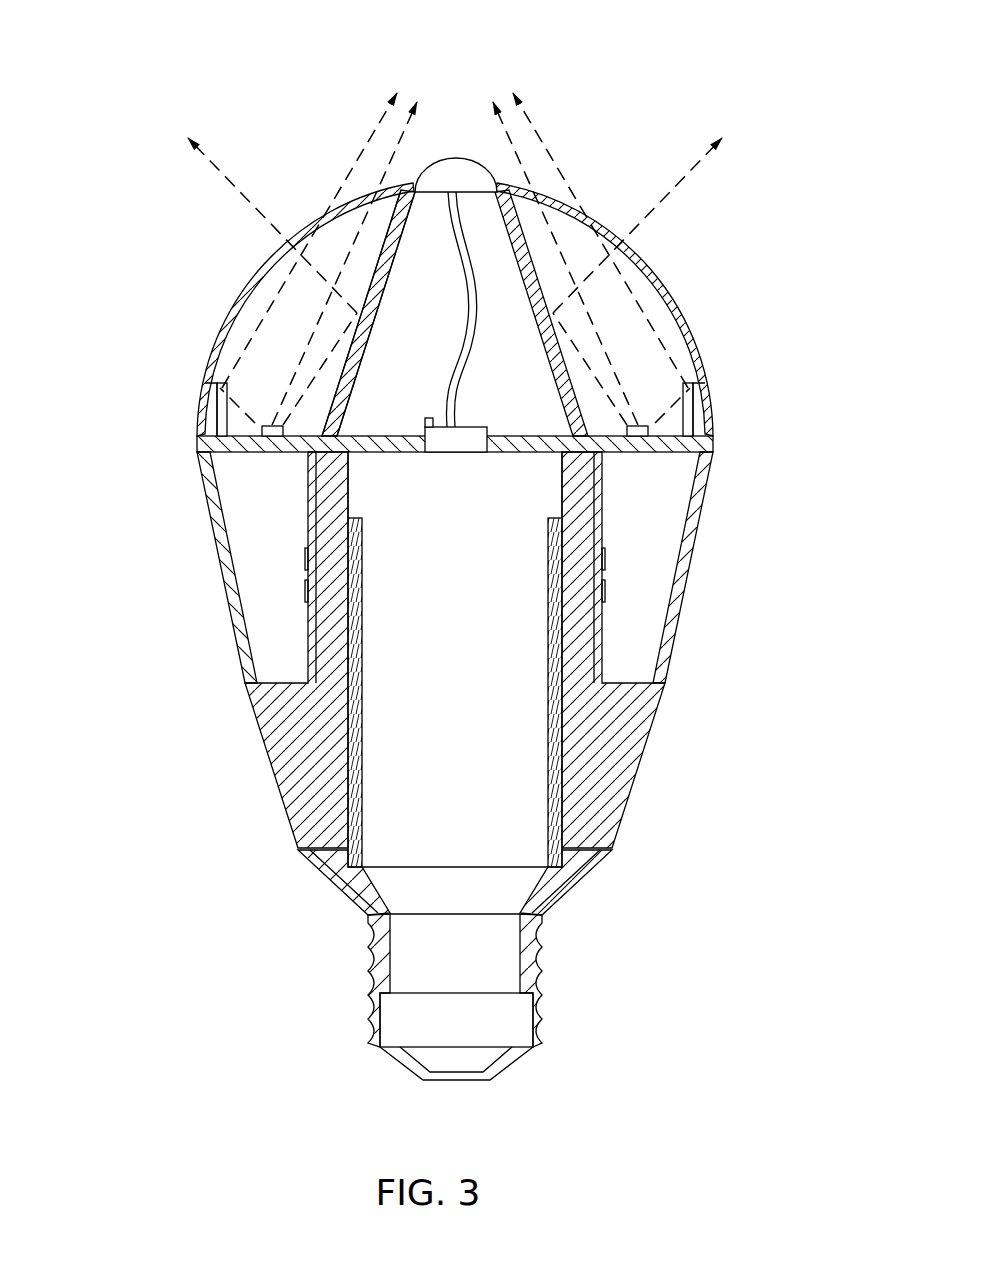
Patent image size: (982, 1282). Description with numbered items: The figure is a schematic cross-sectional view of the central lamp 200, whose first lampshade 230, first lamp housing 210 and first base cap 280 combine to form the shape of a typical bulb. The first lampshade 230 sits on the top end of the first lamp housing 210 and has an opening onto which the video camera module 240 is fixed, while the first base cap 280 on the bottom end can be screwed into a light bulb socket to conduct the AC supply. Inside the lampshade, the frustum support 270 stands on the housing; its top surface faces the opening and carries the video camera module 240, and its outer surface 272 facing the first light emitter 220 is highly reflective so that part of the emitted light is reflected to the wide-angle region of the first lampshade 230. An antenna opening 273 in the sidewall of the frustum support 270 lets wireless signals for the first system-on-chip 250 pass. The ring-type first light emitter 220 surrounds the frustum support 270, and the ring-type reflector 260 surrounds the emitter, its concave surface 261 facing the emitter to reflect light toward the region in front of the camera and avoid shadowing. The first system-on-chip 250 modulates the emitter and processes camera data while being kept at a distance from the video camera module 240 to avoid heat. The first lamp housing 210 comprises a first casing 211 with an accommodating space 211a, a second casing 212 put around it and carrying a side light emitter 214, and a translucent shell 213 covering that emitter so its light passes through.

The central lamp 200 is at (119, 59).
The first lamp housing 210 is at (100, 630).
The first casing 211 is at (340, 872).
The accommodating space 211a is at (490, 762).
The second casing 212 is at (278, 752).
The translucent shell 213 is at (233, 627).
The side light emitter 214 is at (307, 503).
The first light emitter 220 is at (640, 426).
The first lampshade 230 is at (653, 270).
The video camera module 240 is at (453, 174).
The first system-on-chip 250 is at (462, 438).
The reflector 260 is at (688, 396).
The concave surface 261 is at (700, 447).
The frustum support 270 is at (524, 235).
The outer surface 272 is at (367, 293).
The antenna opening 273 is at (347, 370).
The first base cap 280 is at (541, 1040).